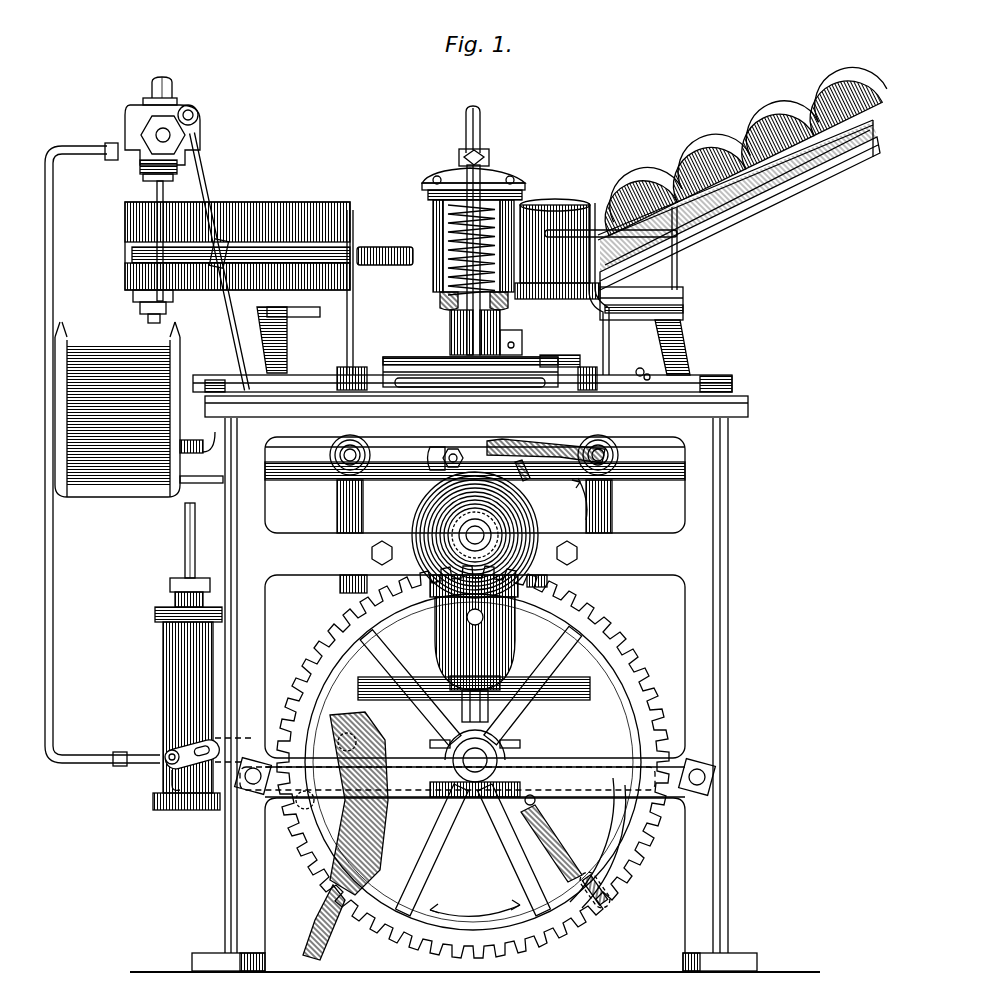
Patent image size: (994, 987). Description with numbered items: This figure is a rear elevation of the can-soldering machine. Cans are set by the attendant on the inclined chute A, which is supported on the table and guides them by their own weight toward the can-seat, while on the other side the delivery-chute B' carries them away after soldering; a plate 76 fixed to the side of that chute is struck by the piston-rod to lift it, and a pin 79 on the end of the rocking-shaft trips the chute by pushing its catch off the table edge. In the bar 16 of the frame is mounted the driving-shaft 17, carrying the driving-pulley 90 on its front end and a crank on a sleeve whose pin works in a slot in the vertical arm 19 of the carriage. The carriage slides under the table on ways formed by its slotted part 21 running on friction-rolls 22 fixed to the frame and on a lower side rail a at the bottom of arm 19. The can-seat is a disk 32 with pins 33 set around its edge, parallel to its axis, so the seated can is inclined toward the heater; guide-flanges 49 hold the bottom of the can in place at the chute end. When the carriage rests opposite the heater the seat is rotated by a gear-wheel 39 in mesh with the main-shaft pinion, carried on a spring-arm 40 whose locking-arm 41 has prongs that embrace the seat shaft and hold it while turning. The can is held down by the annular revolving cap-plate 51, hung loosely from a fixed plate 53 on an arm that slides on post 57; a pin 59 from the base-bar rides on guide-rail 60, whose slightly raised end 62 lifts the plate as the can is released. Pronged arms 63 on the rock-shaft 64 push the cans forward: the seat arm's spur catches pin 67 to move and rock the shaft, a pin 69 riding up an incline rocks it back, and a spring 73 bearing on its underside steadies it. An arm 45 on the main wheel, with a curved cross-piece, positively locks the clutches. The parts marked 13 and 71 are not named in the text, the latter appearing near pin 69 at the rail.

The post 57 is at (481, 116).
The fixed annular plate 53 is at (508, 170).
The annular revolving cap-plate 51 is at (456, 242).
The guide-flanges 49 is at (455, 262).
The pins 33 is at (447, 302).
The disk 32 is at (503, 306).
The pin 59 is at (450, 336).
The pin 67 is at (521, 347).
The bed plate 13 is at (545, 356).
The guide-rail 60 is at (602, 329).
The pronged arms 63 is at (350, 345).
The rock-shaft 64 is at (302, 368).
The raised end of guide-rail 62 is at (395, 357).
The bolt 71 is at (640, 368).
The pin 69 is at (649, 375).
The spring 73 is at (322, 397).
The pin 79 is at (204, 447).
The plate 76 is at (201, 452).
The delivery-chute B' is at (117, 409).
The chute A is at (718, 172).
The friction-rolls 22 is at (364, 453).
The gear-wheel 39 is at (446, 458).
The spring-arm 40 is at (546, 451).
The locking-arm 41 is at (524, 472).
The slotted part of the carriage 21 is at (406, 480).
The driving-pulley 90 is at (413, 519).
The driving-shaft 17 is at (475, 535).
The bar 16 is at (590, 555).
The vertical arm 19 is at (504, 618).
The lower side rail a is at (568, 688).
The arm 45 is at (556, 834).